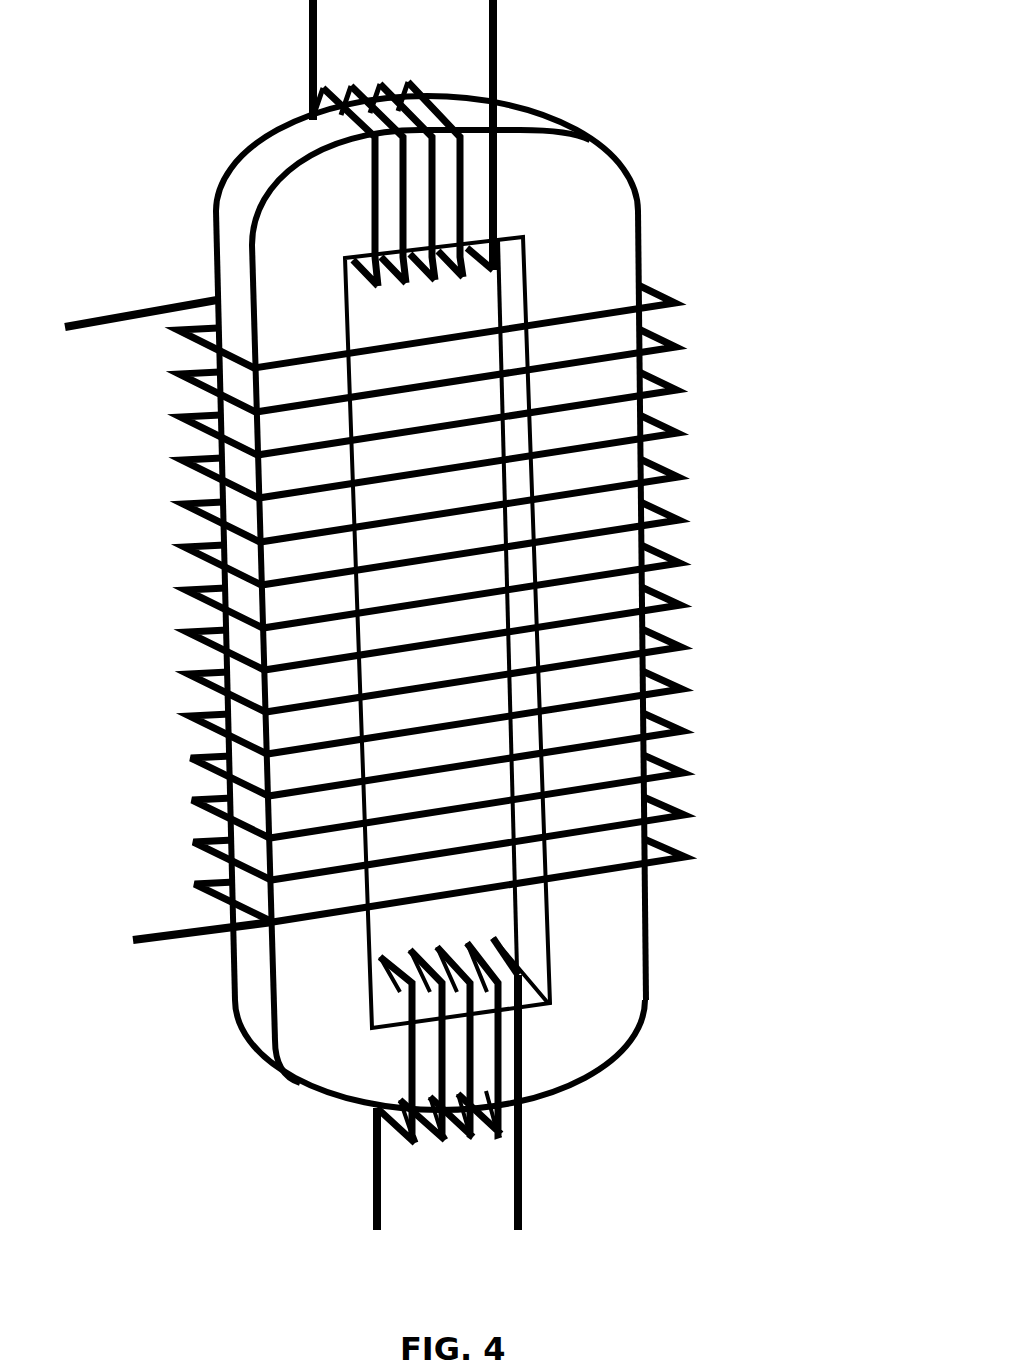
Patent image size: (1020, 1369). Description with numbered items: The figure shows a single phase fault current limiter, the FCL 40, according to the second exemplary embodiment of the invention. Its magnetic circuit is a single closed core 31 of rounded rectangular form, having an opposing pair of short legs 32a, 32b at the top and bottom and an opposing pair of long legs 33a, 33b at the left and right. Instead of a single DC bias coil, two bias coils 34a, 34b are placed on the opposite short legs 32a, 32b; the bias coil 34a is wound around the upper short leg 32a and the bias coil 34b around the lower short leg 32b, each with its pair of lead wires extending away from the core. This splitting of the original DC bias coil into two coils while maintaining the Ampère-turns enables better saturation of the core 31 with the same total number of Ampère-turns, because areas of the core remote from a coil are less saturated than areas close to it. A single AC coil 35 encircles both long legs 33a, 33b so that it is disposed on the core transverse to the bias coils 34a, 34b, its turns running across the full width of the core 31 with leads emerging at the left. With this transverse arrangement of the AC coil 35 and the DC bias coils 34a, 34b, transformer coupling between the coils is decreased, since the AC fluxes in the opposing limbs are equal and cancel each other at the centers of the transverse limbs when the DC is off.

The closed core 31 is at (645, 122).
The short leg 32a is at (298, 183).
The short leg 32b is at (553, 1073).
The long leg 33a is at (333, 992).
The long leg 33b is at (623, 973).
The bias coil 34a is at (312, 57).
The bias coil 34b is at (375, 1185).
The AC coil 35 is at (122, 308).
The FCL 40 is at (435, 639).